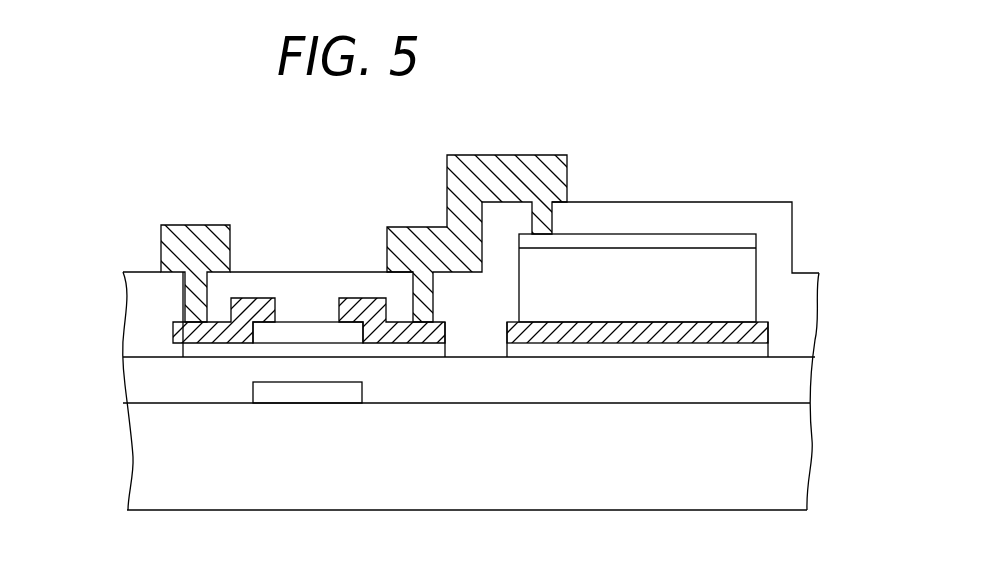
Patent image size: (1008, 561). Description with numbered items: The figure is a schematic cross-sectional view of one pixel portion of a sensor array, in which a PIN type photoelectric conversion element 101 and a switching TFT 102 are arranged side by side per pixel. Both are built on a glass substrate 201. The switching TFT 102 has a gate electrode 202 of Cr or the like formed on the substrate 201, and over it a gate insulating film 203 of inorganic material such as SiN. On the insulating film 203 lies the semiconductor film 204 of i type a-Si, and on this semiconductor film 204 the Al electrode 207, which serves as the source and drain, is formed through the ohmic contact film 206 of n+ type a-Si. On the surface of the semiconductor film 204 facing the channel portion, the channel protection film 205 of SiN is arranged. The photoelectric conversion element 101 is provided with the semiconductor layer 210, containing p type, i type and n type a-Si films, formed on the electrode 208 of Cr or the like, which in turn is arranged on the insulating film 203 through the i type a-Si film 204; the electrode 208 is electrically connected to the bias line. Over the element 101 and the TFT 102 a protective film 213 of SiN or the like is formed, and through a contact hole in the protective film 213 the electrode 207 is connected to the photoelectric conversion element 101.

The photoelectric conversion element 101 is at (600, 158).
The switching TFT 102 is at (282, 163).
The glass substrate 201 is at (803, 467).
The gate electrode 202 is at (311, 397).
The gate insulating film 203 is at (793, 388).
The semiconductor film 204 is at (177, 347).
The channel protection film 205 is at (345, 341).
The ohmic contact film 206 is at (177, 322).
The Al electrode 207 is at (168, 237).
The electrode 208 is at (765, 333).
The semiconductor layer 210 is at (723, 272).
The protective film 213 is at (303, 280).